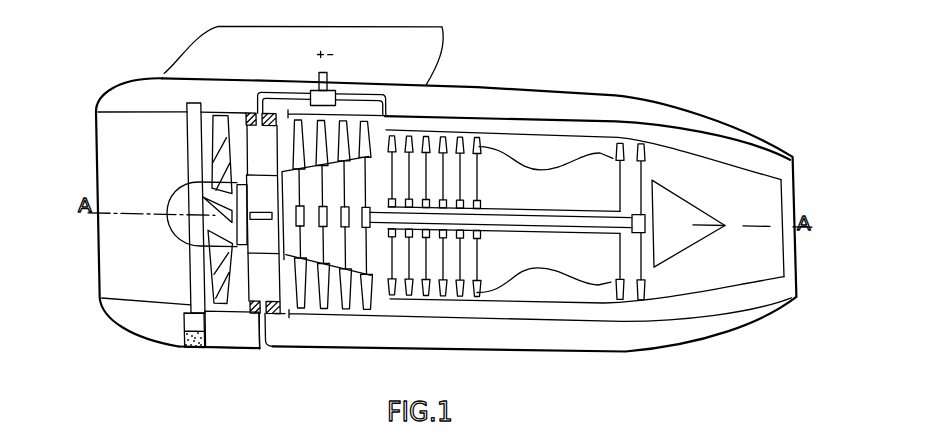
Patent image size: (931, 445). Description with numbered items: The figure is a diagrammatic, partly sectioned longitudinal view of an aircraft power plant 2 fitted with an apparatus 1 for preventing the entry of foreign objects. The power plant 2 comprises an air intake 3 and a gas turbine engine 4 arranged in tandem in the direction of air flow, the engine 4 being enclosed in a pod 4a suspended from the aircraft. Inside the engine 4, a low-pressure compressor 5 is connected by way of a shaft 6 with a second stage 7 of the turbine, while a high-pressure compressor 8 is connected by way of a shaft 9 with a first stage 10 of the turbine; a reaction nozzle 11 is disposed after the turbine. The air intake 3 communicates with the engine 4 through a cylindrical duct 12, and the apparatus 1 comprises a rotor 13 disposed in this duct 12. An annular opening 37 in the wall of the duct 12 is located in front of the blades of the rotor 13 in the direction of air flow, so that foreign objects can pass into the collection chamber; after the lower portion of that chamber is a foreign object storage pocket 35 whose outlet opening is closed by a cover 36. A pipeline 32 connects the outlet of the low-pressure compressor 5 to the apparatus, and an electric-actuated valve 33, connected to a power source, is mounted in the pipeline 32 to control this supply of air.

The apparatus 1 is at (184, 236).
The power plant 2 is at (413, 321).
The air intake 3 is at (123, 323).
The gas turbine engine 4 is at (528, 272).
The pod 4a is at (545, 100).
The low-pressure compressor 5 is at (315, 308).
The shaft 6 is at (383, 221).
The second stage of turbine 7 is at (645, 288).
The high-pressure compressor 8 is at (470, 300).
The shaft 9 is at (611, 223).
The first stage of turbine 10 is at (612, 291).
The reaction nozzle 11 is at (783, 261).
The cylindrical duct 12 is at (242, 297).
The rotor 13 is at (219, 176).
The pipeline 32 is at (387, 98).
The electric-actuated valve 33 is at (318, 89).
The foreign object storage pocket 35 is at (178, 347).
The cover 36 is at (193, 349).
The annular opening 37 is at (195, 300).